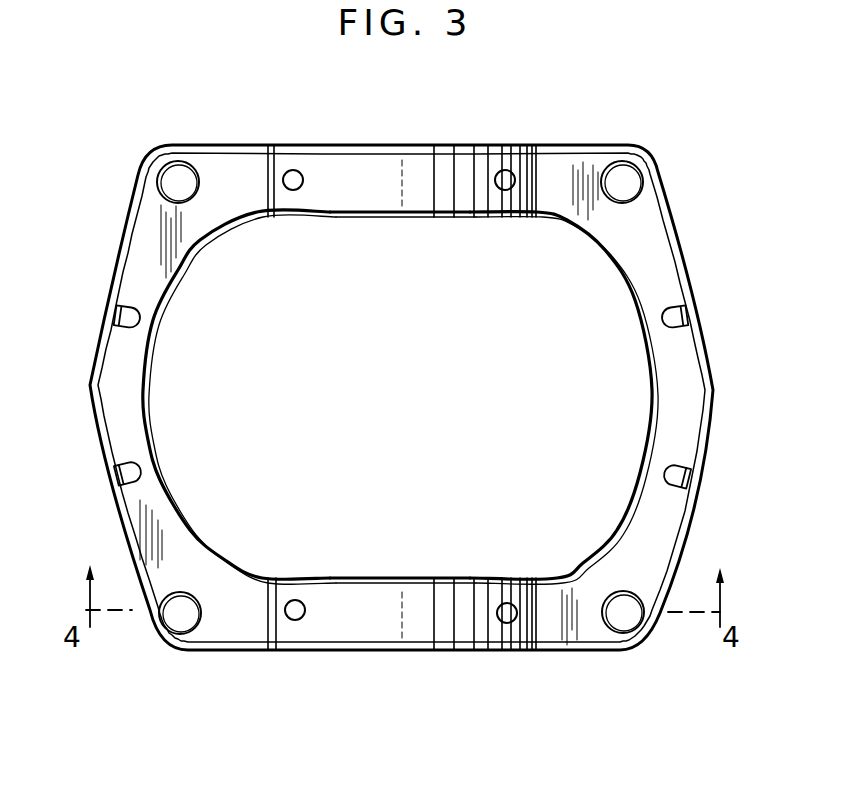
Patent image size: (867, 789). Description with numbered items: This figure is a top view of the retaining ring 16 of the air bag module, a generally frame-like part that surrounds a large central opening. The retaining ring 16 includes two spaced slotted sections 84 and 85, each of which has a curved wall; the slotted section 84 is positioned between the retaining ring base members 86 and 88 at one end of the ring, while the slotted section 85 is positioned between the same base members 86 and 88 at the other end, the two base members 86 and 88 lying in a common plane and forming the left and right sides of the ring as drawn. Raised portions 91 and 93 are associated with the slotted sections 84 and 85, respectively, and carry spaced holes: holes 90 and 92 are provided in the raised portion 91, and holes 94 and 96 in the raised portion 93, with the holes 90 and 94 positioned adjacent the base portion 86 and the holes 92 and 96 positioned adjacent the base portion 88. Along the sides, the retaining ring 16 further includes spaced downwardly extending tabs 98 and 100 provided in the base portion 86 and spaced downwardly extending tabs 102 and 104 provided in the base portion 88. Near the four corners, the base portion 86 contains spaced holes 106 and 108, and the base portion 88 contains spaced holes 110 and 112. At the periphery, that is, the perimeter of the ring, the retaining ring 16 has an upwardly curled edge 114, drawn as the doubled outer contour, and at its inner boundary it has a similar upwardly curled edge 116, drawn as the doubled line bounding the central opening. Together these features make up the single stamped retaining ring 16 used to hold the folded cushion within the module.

The retaining ring 16 is at (446, 126).
The slotted section 84 is at (445, 595).
The slotted section 85 is at (360, 193).
The retaining ring base member 86 is at (125, 376).
The retaining ring base member 88 is at (690, 375).
The hole 90 is at (291, 599).
The raised portion 91 is at (357, 600).
The hole 92 is at (508, 604).
The raised portion 93 is at (333, 160).
The hole 94 is at (293, 189).
The hole 96 is at (498, 189).
The downwardly extending tab 98 is at (116, 311).
The downwardly extending tab 100 is at (117, 480).
The downwardly extending tab 102 is at (688, 312).
The downwardly extending tab 104 is at (690, 478).
The hole 106 is at (166, 181).
The hole 108 is at (173, 621).
The hole 110 is at (628, 178).
The hole 112 is at (628, 621).
The upwardly curled edge 114 is at (715, 410).
The upwardly curled edge 116 is at (150, 392).